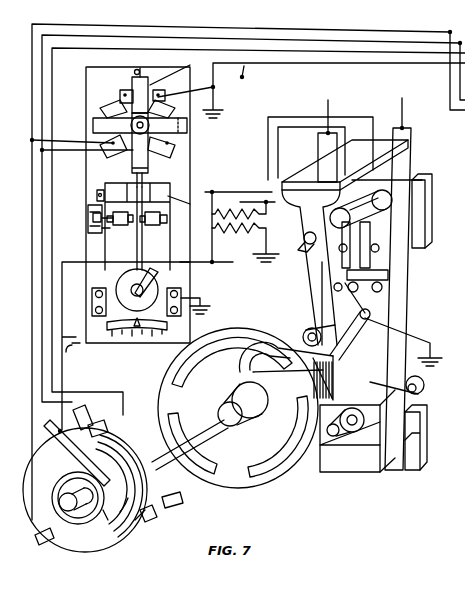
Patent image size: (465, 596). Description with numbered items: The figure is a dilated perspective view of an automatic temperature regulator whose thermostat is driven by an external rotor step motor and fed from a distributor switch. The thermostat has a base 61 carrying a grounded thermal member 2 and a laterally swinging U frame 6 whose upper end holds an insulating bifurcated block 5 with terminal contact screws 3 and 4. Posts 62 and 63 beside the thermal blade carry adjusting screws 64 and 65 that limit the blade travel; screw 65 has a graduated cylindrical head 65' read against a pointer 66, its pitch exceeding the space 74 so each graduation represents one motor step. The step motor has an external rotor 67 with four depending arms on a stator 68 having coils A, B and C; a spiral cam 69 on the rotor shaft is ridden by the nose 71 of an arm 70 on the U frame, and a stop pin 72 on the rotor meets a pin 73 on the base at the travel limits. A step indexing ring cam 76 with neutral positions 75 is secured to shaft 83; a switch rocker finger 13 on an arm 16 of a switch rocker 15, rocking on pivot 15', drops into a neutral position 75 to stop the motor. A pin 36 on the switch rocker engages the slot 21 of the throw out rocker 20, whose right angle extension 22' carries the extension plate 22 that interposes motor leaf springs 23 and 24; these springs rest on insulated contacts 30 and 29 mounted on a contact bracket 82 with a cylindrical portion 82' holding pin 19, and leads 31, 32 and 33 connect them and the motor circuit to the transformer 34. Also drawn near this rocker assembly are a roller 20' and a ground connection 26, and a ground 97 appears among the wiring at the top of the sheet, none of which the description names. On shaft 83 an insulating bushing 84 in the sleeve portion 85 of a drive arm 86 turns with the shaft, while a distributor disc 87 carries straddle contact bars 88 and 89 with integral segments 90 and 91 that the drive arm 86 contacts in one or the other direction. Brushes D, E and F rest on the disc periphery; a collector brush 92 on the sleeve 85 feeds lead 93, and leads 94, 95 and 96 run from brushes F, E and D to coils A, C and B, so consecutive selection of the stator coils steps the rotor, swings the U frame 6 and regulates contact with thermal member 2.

The thermal member 2 is at (137, 250).
The terminal contact screw 3 is at (97, 195).
The terminal contact screw 4 is at (184, 206).
The bifurcated block 5 is at (108, 187).
The U frame 6 is at (130, 268).
The switch rocker finger 13 is at (262, 348).
The switch rocker 15 is at (405, 387).
The pivot 15' is at (346, 437).
The arm 16 is at (303, 420).
The pin 19 is at (304, 244).
The throw out rocker 20 is at (305, 303).
The roller 20' is at (395, 209).
The slot 21 is at (308, 330).
The extension plate 22 is at (352, 165).
The right angle extension 22' is at (309, 267).
The motor leaf spring 23 is at (327, 133).
The motor leaf spring 24 is at (423, 138).
The ground connection 26 is at (430, 366).
The insulated contact 29 is at (345, 250).
The insulated contact 30 is at (378, 277).
The lead 31 is at (295, 117).
The lead 32 is at (402, 106).
The lead 33 is at (218, 264).
The transformer 34 is at (232, 231).
The pin 36 is at (347, 328).
The base 61 is at (422, 455).
The post 62 is at (160, 226).
The post 63 is at (123, 226).
The adjusting screw 64 is at (168, 220).
The adjusting screw 65 is at (82, 236).
The graduated cylindrical head 65' is at (84, 219).
The pointer 66 is at (92, 220).
The external rotor 67 is at (178, 68).
The three coil consequent pole stator 68 is at (100, 108).
The spiral cam 69 is at (95, 125).
The arm 70 is at (160, 167).
The nose 71 is at (190, 125).
The stop pin 72 is at (145, 72).
The pin 73 is at (134, 70).
The space 74 is at (138, 218).
The neutral stop position 75 is at (180, 373).
The step indexing ring cam 76 is at (236, 340).
The contact bracket 82 is at (432, 205).
The cylindrical portion 82' is at (403, 198).
The shaft 83 is at (205, 432).
The insulating bushing 84 is at (85, 508).
The sleeve portion 85 is at (104, 512).
The drive arm 86 is at (133, 507).
The distributor disc 87 is at (65, 540).
The straddle contact bar 88 is at (153, 521).
The straddle contact bar 89 is at (100, 430).
The segment 90 is at (137, 523).
The segment 91 is at (120, 445).
The collector brush 92 is at (60, 430).
The lead 93 is at (116, 340).
The lead 94 is at (67, 33).
The lead 95 is at (108, 33).
The lead 96 is at (140, 47).
The ground 97 is at (311, 90).
The stator coil A is at (168, 143).
The stator coil B is at (163, 92).
The stator coil C is at (108, 150).
The brush D is at (172, 507).
The brush E is at (40, 546).
The brush F is at (88, 412).